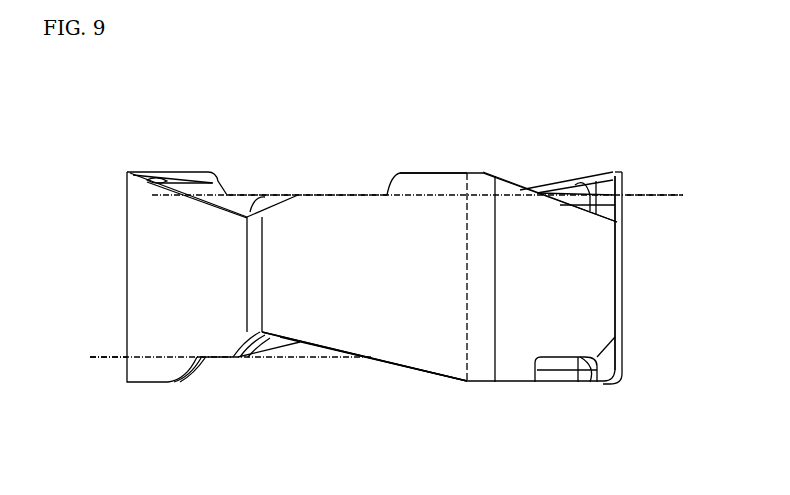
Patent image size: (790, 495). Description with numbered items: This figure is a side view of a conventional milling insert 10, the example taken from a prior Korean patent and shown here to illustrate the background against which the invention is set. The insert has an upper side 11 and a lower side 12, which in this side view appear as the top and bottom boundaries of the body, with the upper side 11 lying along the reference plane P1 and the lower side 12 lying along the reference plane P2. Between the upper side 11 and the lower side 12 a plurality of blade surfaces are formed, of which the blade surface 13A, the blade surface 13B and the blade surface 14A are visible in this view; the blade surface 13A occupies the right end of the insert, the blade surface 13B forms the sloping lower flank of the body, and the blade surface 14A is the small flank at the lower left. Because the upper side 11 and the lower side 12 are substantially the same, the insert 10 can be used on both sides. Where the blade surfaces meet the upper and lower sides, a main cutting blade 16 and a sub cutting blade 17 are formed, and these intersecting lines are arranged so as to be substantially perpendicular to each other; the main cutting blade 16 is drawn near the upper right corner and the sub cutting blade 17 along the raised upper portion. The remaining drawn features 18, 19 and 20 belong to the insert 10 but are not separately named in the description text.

The milling insert 10 is at (103, 170).
The upper side 11 is at (327, 181).
The lower side 12 is at (348, 372).
The blade surface 13A is at (558, 280).
The blade surface 13B is at (423, 318).
The blade surface 14A is at (207, 303).
The main cutting blade 16 is at (522, 185).
The sub cutting blade 17 is at (441, 170).
The flank portion 18 is at (262, 197).
The cutting edge portion 19 is at (292, 360).
The inclined surface 20 is at (473, 172).
The first reference plane P1 is at (656, 191).
The second reference plane P2 is at (95, 361).